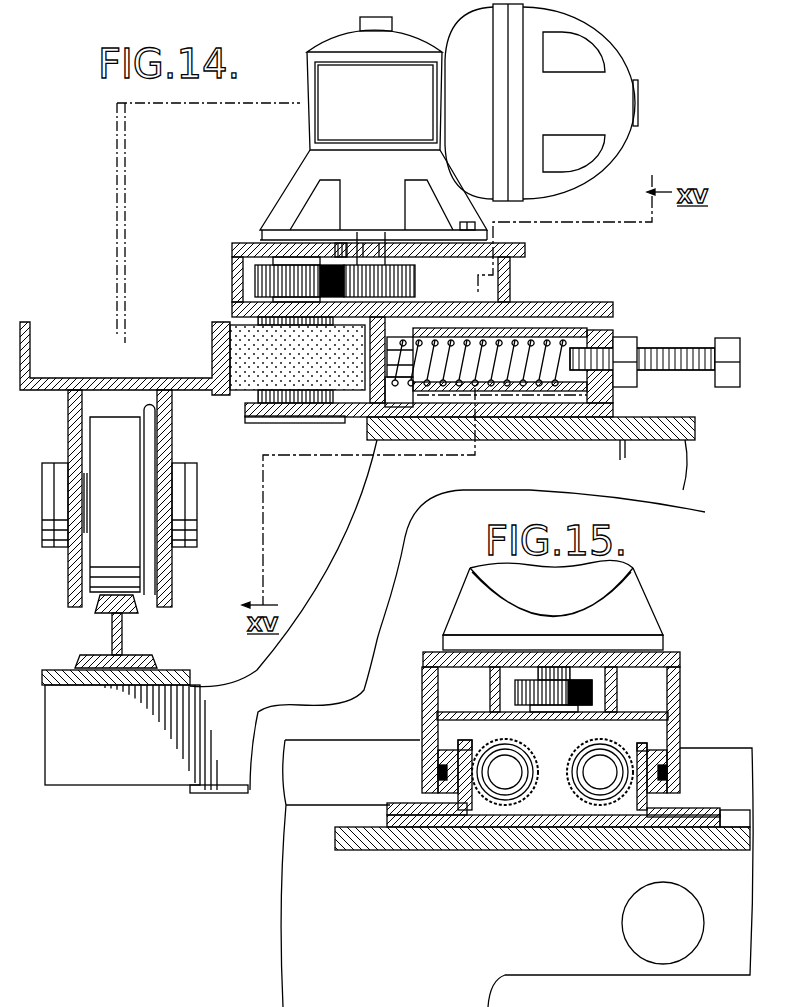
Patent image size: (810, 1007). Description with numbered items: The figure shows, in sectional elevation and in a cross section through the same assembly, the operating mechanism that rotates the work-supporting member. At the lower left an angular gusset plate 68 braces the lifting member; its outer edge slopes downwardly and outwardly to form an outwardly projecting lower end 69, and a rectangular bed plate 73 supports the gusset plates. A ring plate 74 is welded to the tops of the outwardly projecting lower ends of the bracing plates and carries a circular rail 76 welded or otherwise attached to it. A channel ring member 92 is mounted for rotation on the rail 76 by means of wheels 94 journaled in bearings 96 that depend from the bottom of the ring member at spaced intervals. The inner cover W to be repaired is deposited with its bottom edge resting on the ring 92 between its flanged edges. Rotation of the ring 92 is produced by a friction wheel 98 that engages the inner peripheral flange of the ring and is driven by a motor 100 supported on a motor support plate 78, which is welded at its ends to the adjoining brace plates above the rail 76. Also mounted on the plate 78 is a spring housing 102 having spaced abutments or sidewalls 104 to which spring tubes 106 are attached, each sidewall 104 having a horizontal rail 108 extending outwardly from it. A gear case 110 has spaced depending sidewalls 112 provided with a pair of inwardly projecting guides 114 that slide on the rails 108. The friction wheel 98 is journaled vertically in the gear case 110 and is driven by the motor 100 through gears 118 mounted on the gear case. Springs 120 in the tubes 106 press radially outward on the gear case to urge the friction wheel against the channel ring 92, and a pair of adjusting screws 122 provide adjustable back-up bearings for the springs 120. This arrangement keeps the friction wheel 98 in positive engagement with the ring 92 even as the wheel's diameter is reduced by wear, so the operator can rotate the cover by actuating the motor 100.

In FIG. 14, the inner cover W is at (117, 186).
In FIG. 14, the angular gusset plate 68 is at (362, 502).
In FIG. 14, the outwardly projecting lower end 69 is at (52, 744).
In FIG. 14, the bed plate 73 is at (212, 791).
In FIG. 14, the ring plate 74 is at (167, 675).
In FIG. 14, the circular rail 76 is at (113, 626).
In FIG. 14, the motor support plate 78 is at (558, 441).
In FIG. 15, the motor support plate 78 is at (497, 850).
In FIG. 14, the channel ring member 92 is at (50, 378).
In FIG. 14, the wheel 94 is at (108, 443).
In FIG. 14, the bearing 96 is at (58, 498).
In FIG. 15, the bearing 96 is at (624, 932).
In FIG. 14, the friction wheel 98 is at (250, 376).
In FIG. 14, the motor 100 is at (478, 108).
In FIG. 14, the spring housing 102 is at (613, 330).
In FIG. 15, the spring housing 102 is at (387, 816).
In FIG. 15, the sidewall 104 is at (462, 747).
In FIG. 14, the spring tube 106 is at (565, 327).
In FIG. 15, the spring tube 106 is at (580, 752).
In FIG. 15, the horizontal rail 108 is at (432, 770).
In FIG. 14, the gear case 110 is at (514, 271).
In FIG. 15, the gear case 110 is at (684, 661).
In FIG. 15, the depending sidewall 112 is at (425, 689).
In FIG. 15, the guide 114 is at (457, 742).
In FIG. 14, the gear 118 is at (255, 283).
In FIG. 14, the spring 120 is at (512, 330).
In FIG. 15, the spring 120 is at (548, 792).
In FIG. 14, the adjusting screw 122 is at (660, 353).